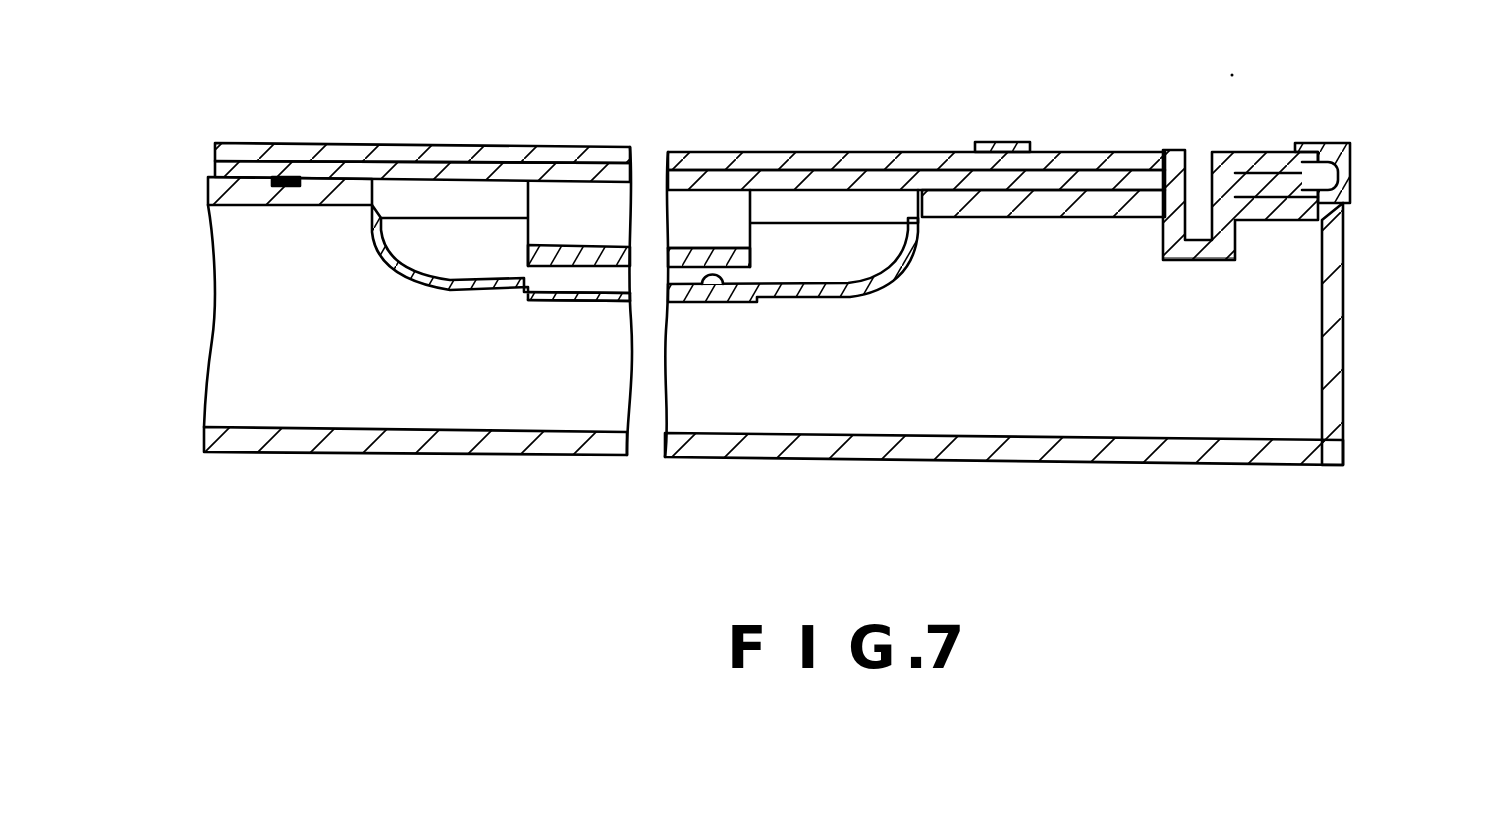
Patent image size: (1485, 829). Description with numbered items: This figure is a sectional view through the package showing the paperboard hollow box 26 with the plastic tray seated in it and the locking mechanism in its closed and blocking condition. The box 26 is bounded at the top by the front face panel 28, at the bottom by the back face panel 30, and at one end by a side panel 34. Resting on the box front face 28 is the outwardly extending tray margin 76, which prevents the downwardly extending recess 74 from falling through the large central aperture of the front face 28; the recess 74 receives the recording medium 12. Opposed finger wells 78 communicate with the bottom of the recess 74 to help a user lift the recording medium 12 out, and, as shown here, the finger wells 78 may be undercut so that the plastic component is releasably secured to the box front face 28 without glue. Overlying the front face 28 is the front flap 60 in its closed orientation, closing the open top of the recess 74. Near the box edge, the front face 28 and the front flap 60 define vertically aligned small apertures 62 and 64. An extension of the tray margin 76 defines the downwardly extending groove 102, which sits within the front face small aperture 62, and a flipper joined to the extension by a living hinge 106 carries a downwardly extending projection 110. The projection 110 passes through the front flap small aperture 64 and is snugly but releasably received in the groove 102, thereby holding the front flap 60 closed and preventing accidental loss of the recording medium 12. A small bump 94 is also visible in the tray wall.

The recording medium 12 is at (595, 250).
The hollow box 26 is at (390, 455).
The front face panel 28 is at (307, 200).
The back face panel 30 is at (1205, 467).
The side panel 34 is at (1343, 352).
The front flap 60 is at (350, 138).
The small aperture 62 is at (1140, 218).
The small aperture 64 is at (1174, 222).
The recess 74 is at (600, 295).
The tray margin 76 is at (285, 145).
The finger wells 78 is at (445, 230).
The projection 94 is at (725, 292).
The groove 102 is at (1170, 260).
The living hinge 106 is at (1350, 165).
The projection 110 is at (1212, 262).